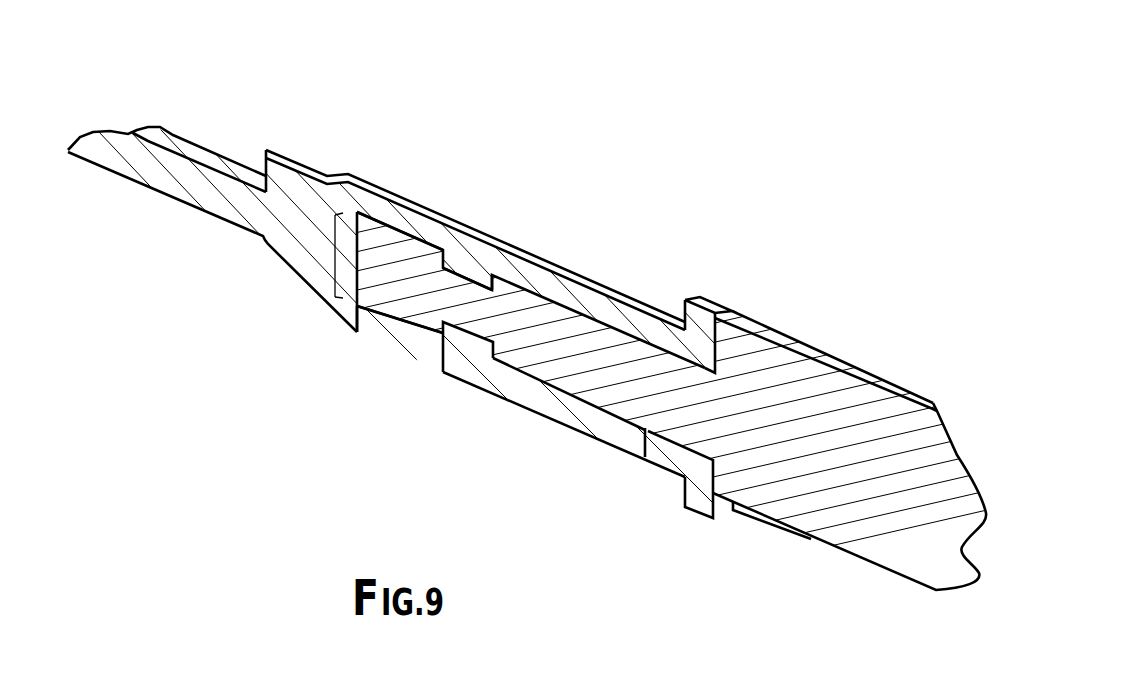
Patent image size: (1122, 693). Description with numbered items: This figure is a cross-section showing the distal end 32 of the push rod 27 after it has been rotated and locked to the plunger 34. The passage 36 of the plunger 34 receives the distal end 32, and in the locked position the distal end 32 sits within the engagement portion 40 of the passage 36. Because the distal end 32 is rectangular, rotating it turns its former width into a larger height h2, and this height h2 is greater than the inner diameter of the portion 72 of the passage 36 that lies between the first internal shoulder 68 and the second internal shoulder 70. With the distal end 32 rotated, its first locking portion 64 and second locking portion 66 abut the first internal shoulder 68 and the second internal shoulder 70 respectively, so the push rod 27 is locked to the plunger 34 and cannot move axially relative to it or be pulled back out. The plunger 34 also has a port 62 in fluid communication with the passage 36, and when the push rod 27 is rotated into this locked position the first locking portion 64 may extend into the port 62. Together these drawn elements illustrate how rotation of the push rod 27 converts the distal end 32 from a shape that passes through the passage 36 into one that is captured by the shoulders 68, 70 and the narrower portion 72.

The push rod 27 is at (804, 463).
The distal end 32 is at (428, 286).
The plunger 34 is at (290, 180).
The passage 36 is at (646, 438).
The engagement portion 40 is at (557, 442).
The port 62 is at (413, 352).
The first locking portion 64 is at (390, 318).
The second locking portion 66 is at (393, 232).
The first internal shoulder 68 is at (463, 362).
The second internal shoulder 70 is at (458, 267).
The portion of the passage 72 is at (487, 271).
The height h2 is at (335, 257).